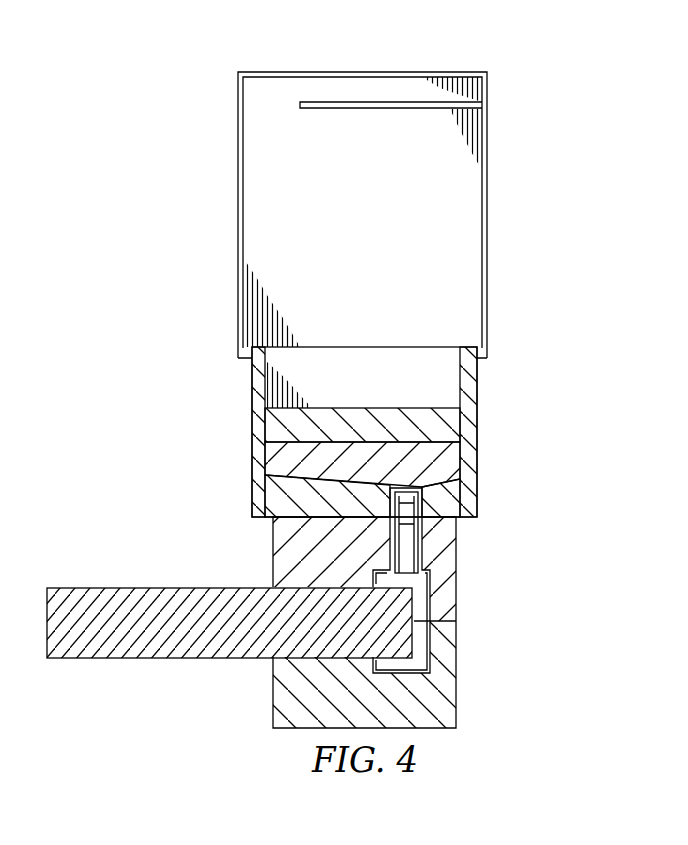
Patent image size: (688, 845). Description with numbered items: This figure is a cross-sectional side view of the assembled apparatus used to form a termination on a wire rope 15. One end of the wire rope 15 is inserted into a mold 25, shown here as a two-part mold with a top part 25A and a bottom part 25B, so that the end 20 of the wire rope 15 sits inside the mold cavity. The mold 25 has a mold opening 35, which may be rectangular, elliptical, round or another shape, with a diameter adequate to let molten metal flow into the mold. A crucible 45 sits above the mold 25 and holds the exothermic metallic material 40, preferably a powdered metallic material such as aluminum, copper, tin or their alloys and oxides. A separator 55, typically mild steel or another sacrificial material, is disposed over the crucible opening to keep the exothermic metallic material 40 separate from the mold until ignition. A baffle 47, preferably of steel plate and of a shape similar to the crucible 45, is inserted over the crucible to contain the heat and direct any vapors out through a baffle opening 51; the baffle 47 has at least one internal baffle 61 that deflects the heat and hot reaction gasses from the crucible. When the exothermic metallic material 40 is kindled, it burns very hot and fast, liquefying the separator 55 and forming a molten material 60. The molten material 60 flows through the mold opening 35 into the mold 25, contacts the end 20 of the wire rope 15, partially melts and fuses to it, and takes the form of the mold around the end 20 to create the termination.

The wire rope 15 is at (170, 658).
The end of wire rope 20 is at (415, 638).
The mold 25 is at (360, 622).
The top part of mold 25A is at (456, 593).
The bottom part of mold 25B is at (456, 671).
The mold opening 35 is at (410, 537).
The exothermic metallic material 40 is at (388, 418).
The crucible 45 is at (238, 419).
The baffle 47 is at (228, 181).
The baffle opening 51 is at (446, 72).
The separator 55 is at (410, 488).
The molten material 60 is at (275, 464).
The internal baffle 61 is at (300, 95).